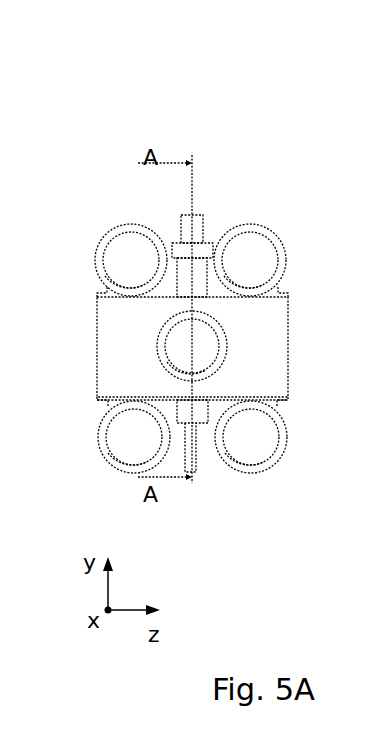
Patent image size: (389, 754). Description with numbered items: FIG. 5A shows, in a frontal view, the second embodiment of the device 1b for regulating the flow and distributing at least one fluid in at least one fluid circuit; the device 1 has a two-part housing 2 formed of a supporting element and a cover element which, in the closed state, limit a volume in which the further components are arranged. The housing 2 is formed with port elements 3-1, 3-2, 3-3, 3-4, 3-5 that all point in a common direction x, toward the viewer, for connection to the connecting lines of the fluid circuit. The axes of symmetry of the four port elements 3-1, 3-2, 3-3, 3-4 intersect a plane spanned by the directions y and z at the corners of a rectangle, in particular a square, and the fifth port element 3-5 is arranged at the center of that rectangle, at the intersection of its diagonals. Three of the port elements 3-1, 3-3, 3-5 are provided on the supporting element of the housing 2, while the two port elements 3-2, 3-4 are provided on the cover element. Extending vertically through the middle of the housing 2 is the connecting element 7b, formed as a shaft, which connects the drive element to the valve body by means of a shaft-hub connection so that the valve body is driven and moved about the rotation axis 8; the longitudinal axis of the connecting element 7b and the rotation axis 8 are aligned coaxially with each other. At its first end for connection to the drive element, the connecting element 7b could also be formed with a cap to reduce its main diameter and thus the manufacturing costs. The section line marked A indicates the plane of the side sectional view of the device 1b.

The device 1b is at (297, 145).
The device 1 is at (383, 252).
The housing 2 is at (122, 352).
The port element 3-1 is at (128, 262).
The port element 3-2 is at (126, 445).
The port element 3-3 is at (248, 260).
The port element 3-4 is at (247, 434).
The fifth port element 3-5 is at (203, 346).
The connecting element 7b is at (198, 228).
The rotation axis 8 is at (193, 180).